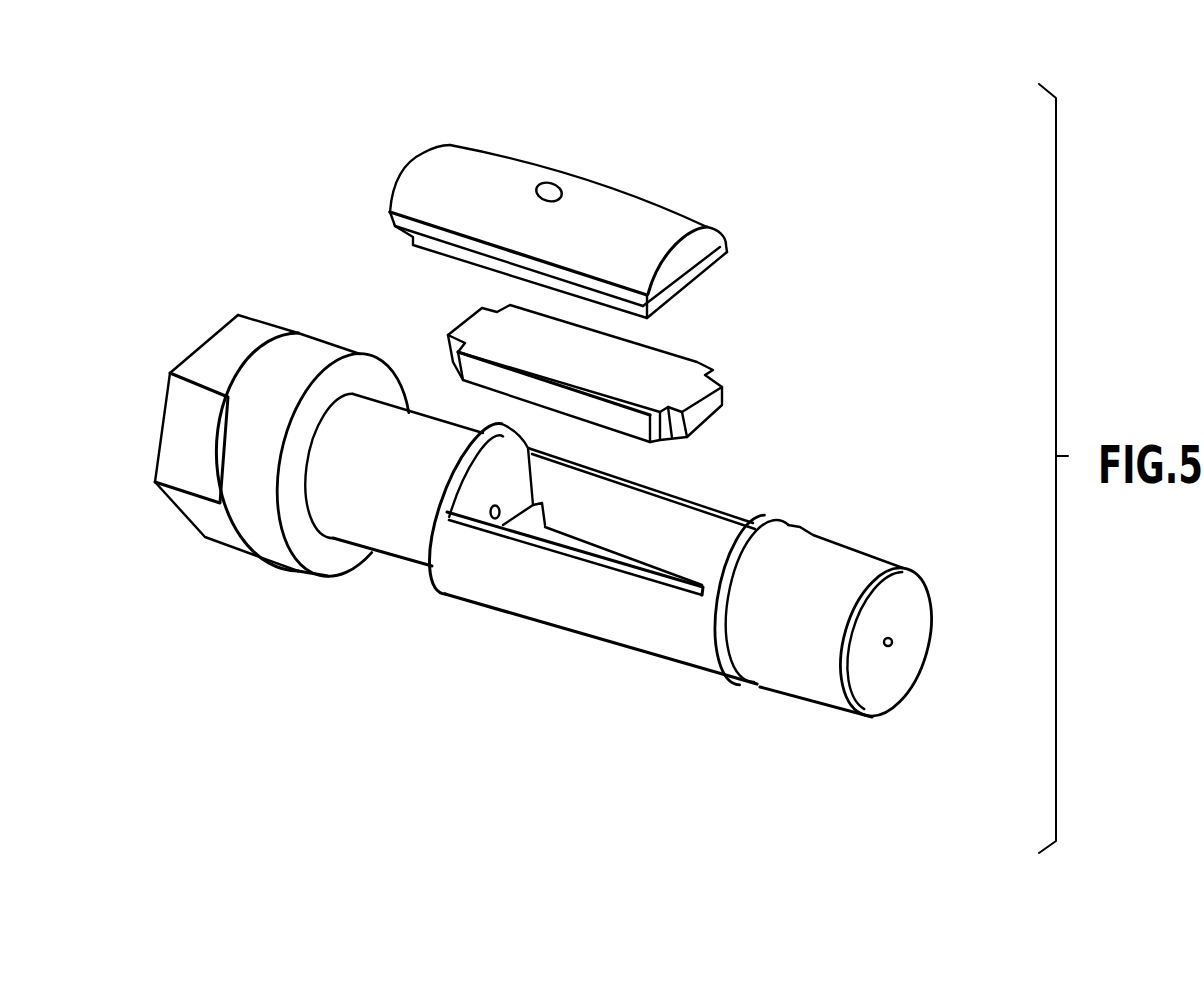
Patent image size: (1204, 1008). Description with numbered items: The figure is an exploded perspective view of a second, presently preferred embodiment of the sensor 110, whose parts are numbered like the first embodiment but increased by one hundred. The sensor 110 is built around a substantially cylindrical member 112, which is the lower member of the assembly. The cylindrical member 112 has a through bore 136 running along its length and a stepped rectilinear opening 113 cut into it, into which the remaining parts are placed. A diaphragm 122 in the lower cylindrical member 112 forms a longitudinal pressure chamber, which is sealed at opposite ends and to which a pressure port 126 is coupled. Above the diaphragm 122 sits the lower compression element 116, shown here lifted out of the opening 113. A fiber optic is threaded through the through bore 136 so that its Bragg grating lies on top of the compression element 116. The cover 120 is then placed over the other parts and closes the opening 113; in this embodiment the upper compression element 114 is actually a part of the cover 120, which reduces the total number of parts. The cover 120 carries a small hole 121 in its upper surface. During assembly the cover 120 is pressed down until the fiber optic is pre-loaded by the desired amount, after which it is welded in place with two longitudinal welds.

The sensor 110 is at (587, 482).
The cylindrical member 112 is at (616, 565).
The stepped rectilinear opening 113 is at (700, 535).
The upper compression element 114 is at (682, 292).
The lower compression element 116 is at (712, 410).
The cover 120 is at (576, 223).
The cover hole 121 is at (549, 186).
The diaphragm 122 is at (889, 621).
The pressure port 126 is at (922, 615).
The through bore 136 is at (895, 642).